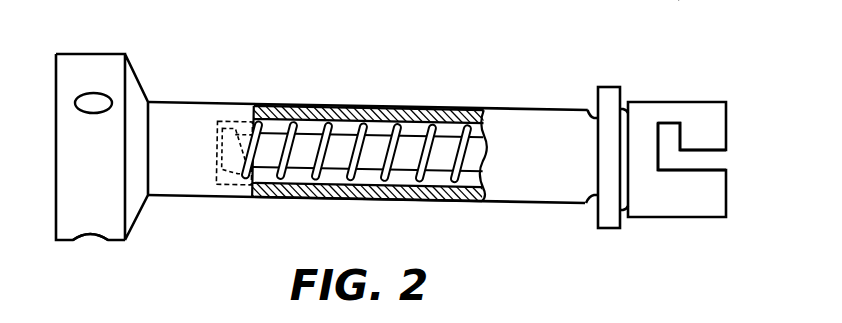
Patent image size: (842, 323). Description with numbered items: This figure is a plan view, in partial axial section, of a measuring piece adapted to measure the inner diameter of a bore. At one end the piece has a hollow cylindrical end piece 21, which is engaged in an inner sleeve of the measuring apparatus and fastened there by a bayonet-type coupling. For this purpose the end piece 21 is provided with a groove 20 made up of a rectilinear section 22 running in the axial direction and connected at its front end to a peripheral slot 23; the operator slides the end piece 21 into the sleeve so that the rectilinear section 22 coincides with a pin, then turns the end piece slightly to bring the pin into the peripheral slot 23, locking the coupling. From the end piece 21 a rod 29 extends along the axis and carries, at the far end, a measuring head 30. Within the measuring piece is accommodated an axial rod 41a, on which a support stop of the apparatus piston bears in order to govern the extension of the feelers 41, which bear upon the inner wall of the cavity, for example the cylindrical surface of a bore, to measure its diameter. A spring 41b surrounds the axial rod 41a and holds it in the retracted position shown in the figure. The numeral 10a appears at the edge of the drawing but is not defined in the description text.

The cable portion 10a is at (678, 0).
The groove 20 is at (704, 159).
The hollow cylindrical end piece 21 is at (680, 207).
The rectilinear section 22 is at (703, 149).
The peripheral slot 23 is at (667, 125).
The rod 29 is at (395, 108).
The measuring head 30 is at (73, 63).
The feelers 41 is at (95, 97).
The axial rod 41a is at (272, 140).
The spring 41b is at (323, 137).